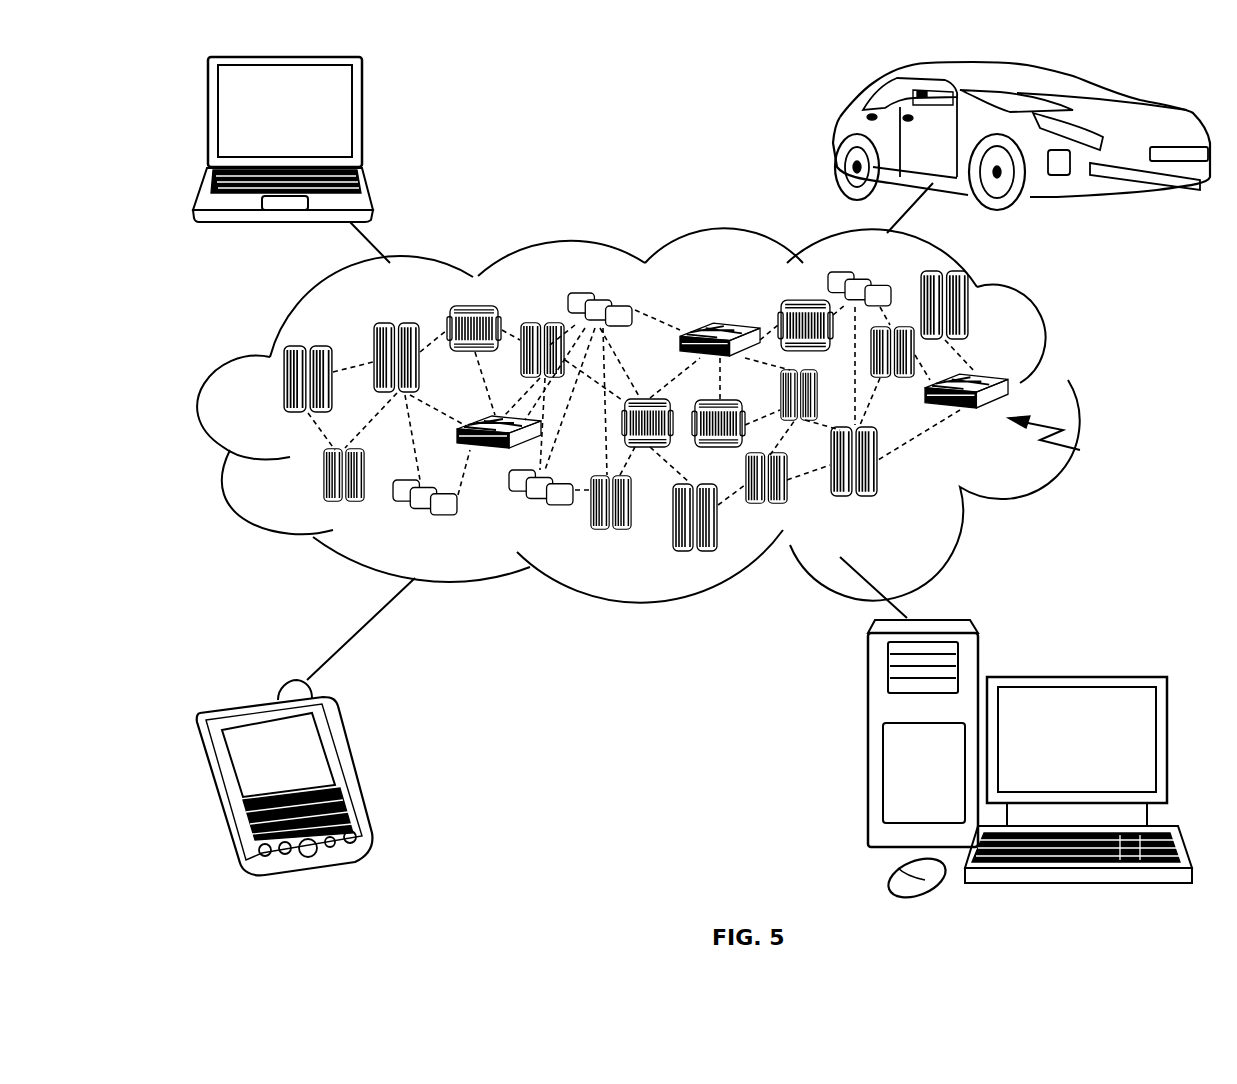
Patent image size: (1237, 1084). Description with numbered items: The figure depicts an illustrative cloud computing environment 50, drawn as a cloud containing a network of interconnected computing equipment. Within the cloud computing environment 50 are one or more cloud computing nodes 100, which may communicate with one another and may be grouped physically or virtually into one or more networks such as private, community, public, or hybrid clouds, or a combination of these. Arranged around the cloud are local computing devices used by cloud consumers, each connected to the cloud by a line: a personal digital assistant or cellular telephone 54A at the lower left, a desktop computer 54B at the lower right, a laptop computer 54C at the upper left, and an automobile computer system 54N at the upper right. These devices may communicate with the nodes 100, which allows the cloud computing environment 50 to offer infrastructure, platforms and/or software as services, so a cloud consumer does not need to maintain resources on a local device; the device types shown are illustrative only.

The cloud computing environment 50 is at (1077, 391).
The cloud computing nodes 100 is at (1085, 444).
The personal digital assistant or cellular telephone 54A is at (347, 777).
The desktop computer 54B is at (1075, 676).
The laptop computer 54C is at (364, 122).
The automobile computer system 54N is at (836, 130).